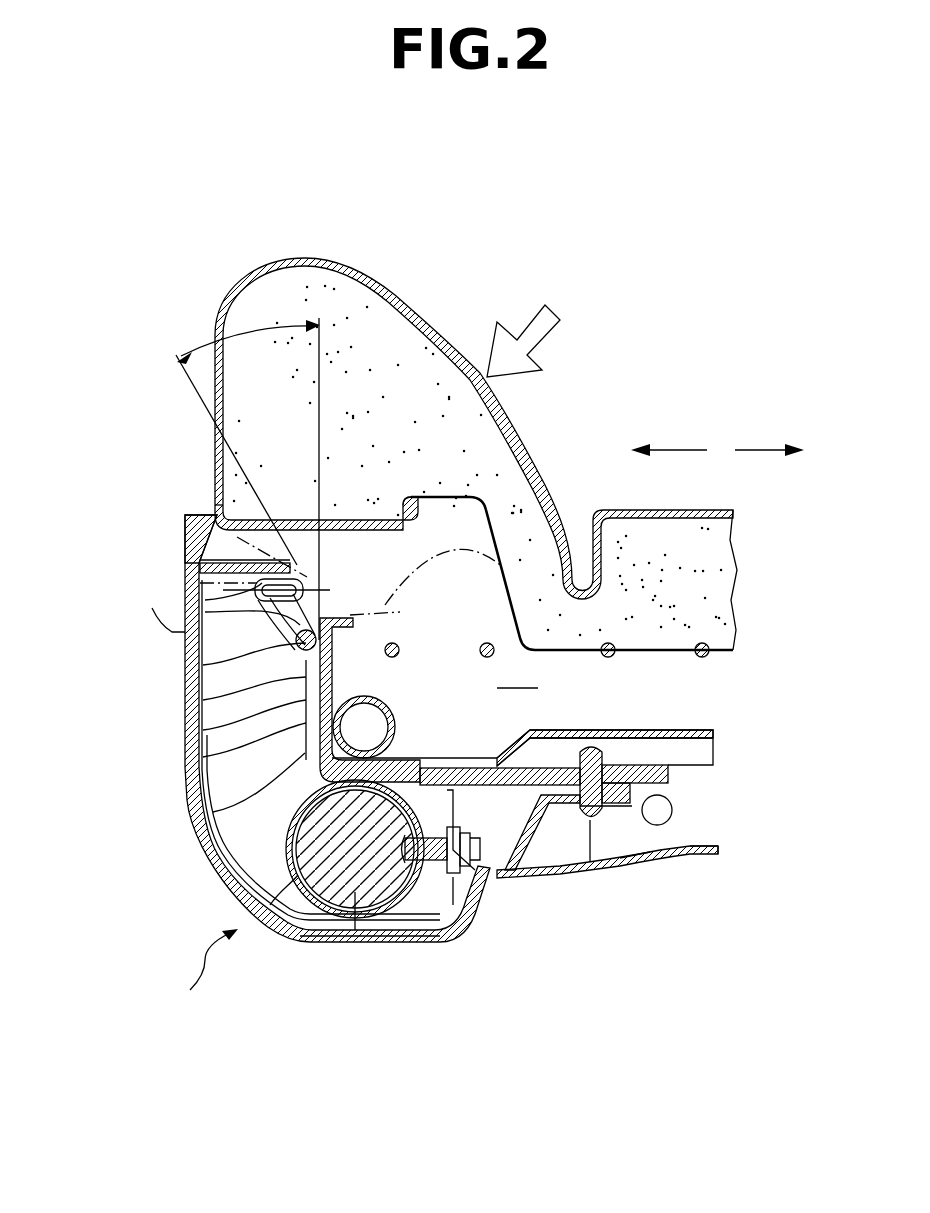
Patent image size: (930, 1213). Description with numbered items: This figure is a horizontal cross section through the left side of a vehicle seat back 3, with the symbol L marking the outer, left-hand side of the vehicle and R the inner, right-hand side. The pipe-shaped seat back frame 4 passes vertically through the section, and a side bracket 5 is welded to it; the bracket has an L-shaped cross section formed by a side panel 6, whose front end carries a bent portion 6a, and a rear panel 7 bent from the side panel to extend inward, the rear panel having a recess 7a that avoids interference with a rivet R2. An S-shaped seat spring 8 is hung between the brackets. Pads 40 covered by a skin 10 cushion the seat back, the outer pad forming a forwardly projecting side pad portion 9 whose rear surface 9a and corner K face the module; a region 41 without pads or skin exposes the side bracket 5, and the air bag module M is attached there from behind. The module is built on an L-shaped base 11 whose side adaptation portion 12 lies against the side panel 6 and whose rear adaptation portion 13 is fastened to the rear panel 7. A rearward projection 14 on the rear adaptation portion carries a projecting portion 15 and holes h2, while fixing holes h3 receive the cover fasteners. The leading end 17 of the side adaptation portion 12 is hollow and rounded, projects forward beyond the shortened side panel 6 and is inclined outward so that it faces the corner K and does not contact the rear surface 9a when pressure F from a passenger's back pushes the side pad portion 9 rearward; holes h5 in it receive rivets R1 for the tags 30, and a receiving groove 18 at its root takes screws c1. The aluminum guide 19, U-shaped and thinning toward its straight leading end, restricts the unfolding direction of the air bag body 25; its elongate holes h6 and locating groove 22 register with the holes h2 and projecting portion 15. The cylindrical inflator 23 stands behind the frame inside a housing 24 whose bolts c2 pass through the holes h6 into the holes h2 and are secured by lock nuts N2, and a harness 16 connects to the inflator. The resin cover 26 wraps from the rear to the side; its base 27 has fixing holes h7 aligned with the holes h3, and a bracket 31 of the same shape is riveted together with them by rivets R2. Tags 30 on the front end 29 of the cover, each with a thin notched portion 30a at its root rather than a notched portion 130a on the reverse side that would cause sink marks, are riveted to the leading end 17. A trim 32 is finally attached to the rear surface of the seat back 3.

The seat back 3 is at (606, 285).
The seat back frame 4 is at (213, 812).
The side bracket 5 is at (233, 760).
The side panel 6 is at (205, 703).
The bent portion 6a is at (338, 600).
The rear panel 7 is at (720, 728).
The recess 7a is at (680, 737).
The S-shape seat spring 8 is at (395, 657).
The side pad portion 9 is at (343, 295).
The rear surface 9a is at (385, 533).
The skin 10 is at (437, 318).
The base 11 is at (323, 927).
The side adaptation portion 12 is at (205, 730).
The rear adaptation portion 13 is at (672, 776).
The rearward projection 14 is at (437, 893).
The projecting portion 15 is at (420, 764).
The harness 16 is at (690, 854).
The leading end 17 is at (200, 565).
The receiving groove 18 is at (353, 623).
The guide 19 is at (237, 910).
The locating groove 22 is at (470, 767).
The inflator 23 is at (300, 905).
The housing 24 is at (400, 940).
The air bag body 25 is at (203, 790).
The cover 26 is at (200, 862).
The base 27 is at (673, 810).
The front end 29 is at (200, 517).
The tags 30 is at (190, 530).
The notched portion 30a is at (188, 548).
The bracket 31 is at (557, 880).
The trim 32 is at (715, 855).
The pads 40 is at (537, 493).
The region 41 is at (518, 671).
The notched portion 130a is at (148, 606).
The pressure F is at (522, 320).
The corner K is at (217, 483).
The left-hand side L is at (654, 450).
The right-hand side R is at (784, 450).
The air bag module M is at (198, 969).
The rivets R1 is at (312, 573).
The rivets R2 is at (627, 855).
The lock nuts N2 is at (490, 903).
The screws c1 is at (205, 668).
The bolts c2 is at (493, 885).
The holes h2 is at (467, 893).
The fixing holes h3 is at (591, 752).
The holes h5 is at (225, 592).
The elongate holes h6 is at (377, 927).
The fixing holes h7 is at (600, 865).